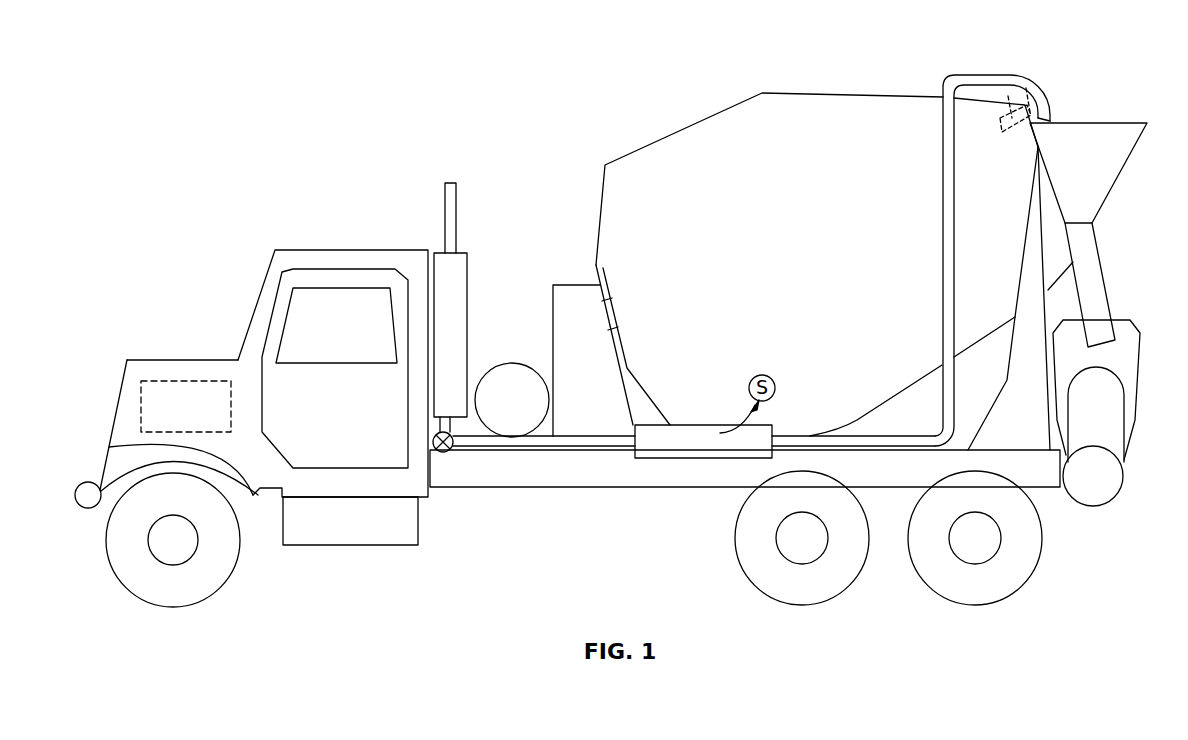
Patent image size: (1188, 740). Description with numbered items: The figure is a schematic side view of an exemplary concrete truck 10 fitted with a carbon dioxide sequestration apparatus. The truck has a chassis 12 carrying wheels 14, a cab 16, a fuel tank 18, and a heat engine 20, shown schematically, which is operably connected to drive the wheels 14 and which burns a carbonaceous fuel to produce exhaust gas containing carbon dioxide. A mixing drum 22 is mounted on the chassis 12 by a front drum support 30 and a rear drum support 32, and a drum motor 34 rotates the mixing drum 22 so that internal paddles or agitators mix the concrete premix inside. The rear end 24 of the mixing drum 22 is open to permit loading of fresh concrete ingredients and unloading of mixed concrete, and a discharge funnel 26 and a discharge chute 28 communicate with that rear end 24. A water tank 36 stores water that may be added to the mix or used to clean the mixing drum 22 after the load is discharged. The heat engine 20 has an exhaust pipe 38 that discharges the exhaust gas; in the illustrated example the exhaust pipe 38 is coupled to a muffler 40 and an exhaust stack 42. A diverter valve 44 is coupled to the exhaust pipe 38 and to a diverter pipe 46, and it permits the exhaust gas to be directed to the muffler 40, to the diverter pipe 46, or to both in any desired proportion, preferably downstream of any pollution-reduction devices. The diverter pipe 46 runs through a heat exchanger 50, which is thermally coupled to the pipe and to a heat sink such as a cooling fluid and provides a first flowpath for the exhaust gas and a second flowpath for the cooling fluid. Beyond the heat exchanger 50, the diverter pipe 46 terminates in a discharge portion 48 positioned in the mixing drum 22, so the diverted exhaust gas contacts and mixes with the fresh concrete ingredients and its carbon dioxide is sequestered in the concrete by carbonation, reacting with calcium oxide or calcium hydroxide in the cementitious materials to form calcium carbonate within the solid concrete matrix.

The concrete truck 10 is at (500, 136).
The chassis 12 is at (573, 478).
The wheels 14 is at (203, 593).
The cab 16 is at (328, 250).
The fuel tank 18 is at (333, 543).
The heat engine 20 is at (190, 380).
The mixing drum 22 is at (817, 264).
The rear end 24 is at (1057, 201).
The discharge funnel 26 is at (1088, 173).
The discharge chute 28 is at (1128, 358).
The front drum support 30 is at (581, 360).
The rear drum support 32 is at (1020, 298).
The drum motor 34 is at (597, 265).
The water tank 36 is at (512, 400).
The exhaust pipe 38 is at (433, 442).
The muffler 40 is at (453, 297).
The exhaust stack 42 is at (453, 223).
The diverter valve 44 is at (443, 452).
The diverter pipe 46 is at (608, 441).
The discharge portion 48 is at (1006, 93).
The heat exchanger 50 is at (703, 441).